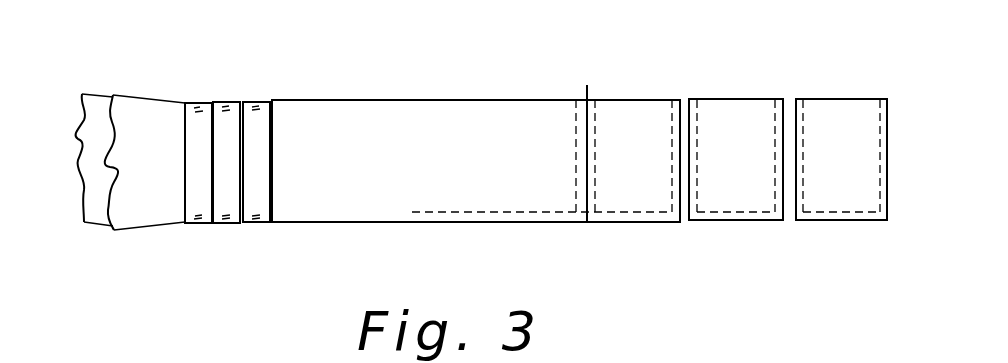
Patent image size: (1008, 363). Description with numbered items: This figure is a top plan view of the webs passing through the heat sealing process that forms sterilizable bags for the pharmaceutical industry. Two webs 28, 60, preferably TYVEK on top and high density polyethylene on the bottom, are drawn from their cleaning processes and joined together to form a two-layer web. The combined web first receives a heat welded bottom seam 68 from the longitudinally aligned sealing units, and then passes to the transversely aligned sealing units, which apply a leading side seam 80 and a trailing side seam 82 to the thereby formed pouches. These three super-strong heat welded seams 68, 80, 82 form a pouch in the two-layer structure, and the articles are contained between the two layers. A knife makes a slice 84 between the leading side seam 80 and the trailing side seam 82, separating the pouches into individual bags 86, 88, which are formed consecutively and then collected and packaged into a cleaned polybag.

The web 28 is at (160, 152).
The web 60 is at (96, 103).
The bottom seam 68 is at (497, 213).
The leading side seam 80 is at (574, 117).
The trailing side seam 82 is at (596, 116).
The slice 84 is at (587, 85).
The bag 86 is at (730, 99).
The bag 88 is at (830, 99).